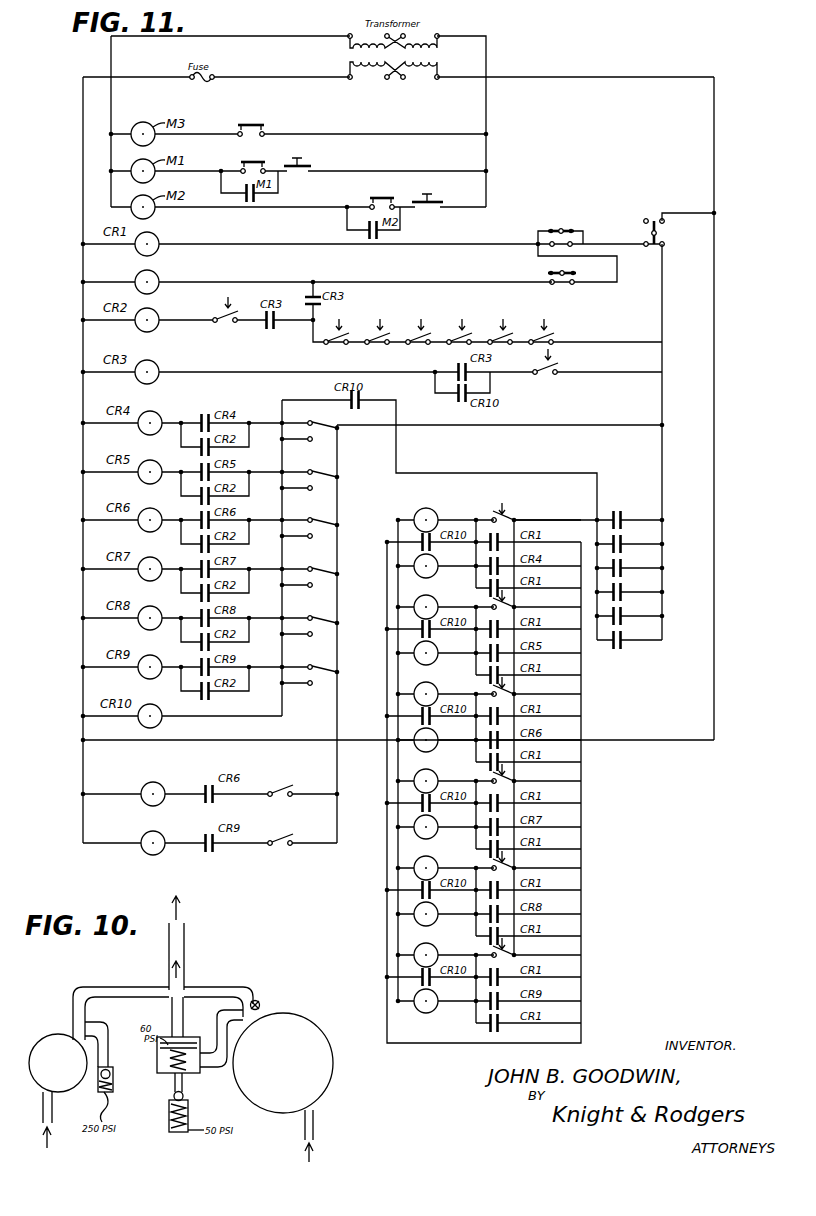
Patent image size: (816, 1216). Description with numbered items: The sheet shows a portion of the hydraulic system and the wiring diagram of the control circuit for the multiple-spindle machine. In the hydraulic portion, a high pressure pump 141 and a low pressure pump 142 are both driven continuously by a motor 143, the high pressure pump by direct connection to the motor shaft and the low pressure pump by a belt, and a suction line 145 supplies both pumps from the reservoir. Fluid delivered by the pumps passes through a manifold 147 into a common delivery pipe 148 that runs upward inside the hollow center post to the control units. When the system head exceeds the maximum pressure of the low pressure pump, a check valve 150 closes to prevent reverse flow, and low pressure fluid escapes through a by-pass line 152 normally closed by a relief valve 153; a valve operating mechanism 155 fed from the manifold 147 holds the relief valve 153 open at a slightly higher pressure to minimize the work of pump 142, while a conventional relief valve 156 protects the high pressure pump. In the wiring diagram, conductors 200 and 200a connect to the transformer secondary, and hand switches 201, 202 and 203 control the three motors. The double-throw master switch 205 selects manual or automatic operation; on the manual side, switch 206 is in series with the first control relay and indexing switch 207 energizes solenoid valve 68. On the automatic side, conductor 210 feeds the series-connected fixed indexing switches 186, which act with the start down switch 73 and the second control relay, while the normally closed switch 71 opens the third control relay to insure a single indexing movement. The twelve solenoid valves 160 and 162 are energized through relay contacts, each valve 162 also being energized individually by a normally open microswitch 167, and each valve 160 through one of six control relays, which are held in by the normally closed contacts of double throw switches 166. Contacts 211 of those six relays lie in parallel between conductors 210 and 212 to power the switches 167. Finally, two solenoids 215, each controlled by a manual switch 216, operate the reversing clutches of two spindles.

In FIG. 11, the conductor 200 is at (714, 213).
In FIG. 11, the conductor 200a is at (83, 360).
In FIG. 11, the hand switch 201 is at (268, 166).
In FIG. 11, the hand switch 202 is at (396, 203).
In FIG. 11, the hand switch 203 is at (268, 131).
In FIG. 11, the master switch 205 is at (647, 223).
In FIG. 11, the switch 206 is at (560, 228).
In FIG. 11, the indexing switch 207 is at (547, 277).
In FIG. 11, the conductor 210 is at (658, 422).
In FIG. 11, the set of contacts 211 is at (621, 660).
In FIG. 11, the conductor 212 is at (578, 517).
In FIG. 11, the solenoid 215 is at (146, 787).
In FIG. 11, the manual switch 216 is at (282, 840).
In FIG. 11, the motor 143 is at (152, 216).
In FIG. 11, the solenoid valve 68 is at (158, 277).
In FIG. 11, the start down switch 73 is at (232, 323).
In FIG. 11, the switch 71 is at (553, 375).
In FIG. 11, the fixed indexing switches 186 is at (388, 333).
In FIG. 11, the double throw switches 166 is at (343, 470).
In FIG. 11, the solenoid valves 162 is at (432, 510).
In FIG. 11, the solenoid valves 160 is at (434, 574).
In FIG. 11, the microswitch 167 is at (510, 517).
In FIG. 10, the high pressure pump 141 is at (50, 1036).
In FIG. 10, the low pressure pump 142 is at (302, 1018).
In FIG. 10, the suction line 145 is at (53, 1113).
In FIG. 10, the manifold 147 is at (249, 988).
In FIG. 10, the common delivery pipe 148 is at (185, 938).
In FIG. 10, the check valve 150 is at (261, 1003).
In FIG. 10, the by-pass line 152 is at (214, 1072).
In FIG. 10, the relief valve 153 is at (173, 1097).
In FIG. 10, the valve operating mechanism 155 is at (164, 1064).
In FIG. 10, the relief valve 156 is at (110, 1072).